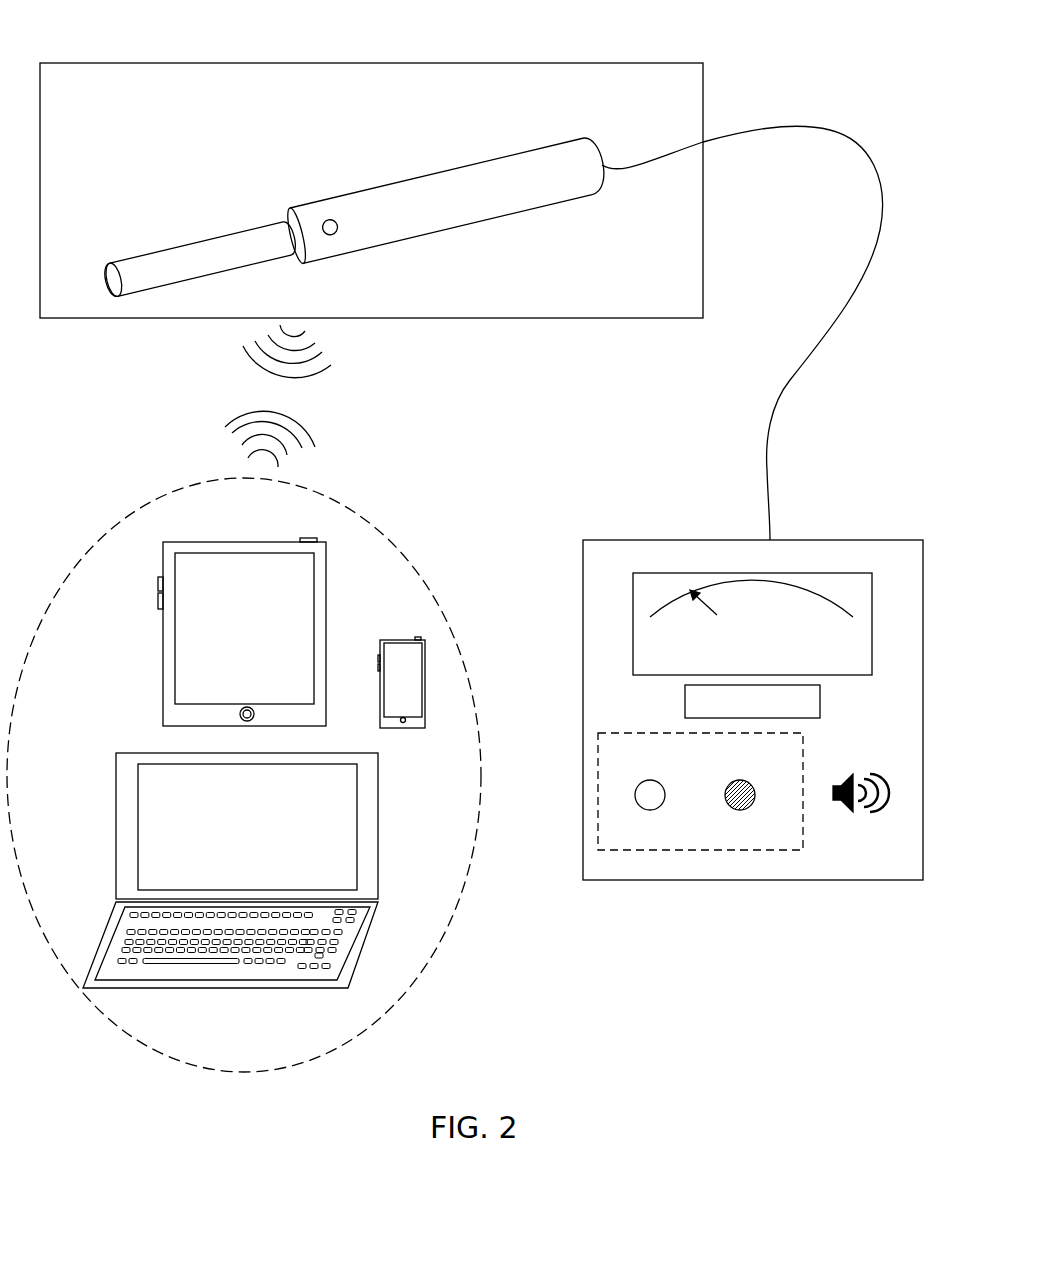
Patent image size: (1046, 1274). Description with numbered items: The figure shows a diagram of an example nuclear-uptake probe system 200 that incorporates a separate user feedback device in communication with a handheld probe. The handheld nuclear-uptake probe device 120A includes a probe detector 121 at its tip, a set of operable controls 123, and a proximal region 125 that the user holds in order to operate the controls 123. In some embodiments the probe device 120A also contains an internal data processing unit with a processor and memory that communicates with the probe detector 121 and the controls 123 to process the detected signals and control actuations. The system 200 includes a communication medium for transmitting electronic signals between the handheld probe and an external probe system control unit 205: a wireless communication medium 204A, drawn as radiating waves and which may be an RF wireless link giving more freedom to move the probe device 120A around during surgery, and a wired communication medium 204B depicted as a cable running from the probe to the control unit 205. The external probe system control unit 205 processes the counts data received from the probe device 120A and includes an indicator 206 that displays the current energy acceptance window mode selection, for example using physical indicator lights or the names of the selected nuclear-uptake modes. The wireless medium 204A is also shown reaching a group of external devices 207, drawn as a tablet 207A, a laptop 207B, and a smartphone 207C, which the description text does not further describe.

The nuclear-uptake probe system 200 is at (803, 82).
The nuclear-uptake probe device 120A is at (495, 63).
The probe detector 121 is at (108, 265).
The set of operable controls 123 is at (331, 235).
The proximal region 125 is at (537, 208).
The wireless communication medium 204A is at (320, 373).
The wired communication medium 204B is at (843, 305).
The external probe system control unit 205 is at (580, 618).
The indicator 206 is at (596, 748).
The external computing devices 207 is at (398, 548).
The tablet computer 207A is at (174, 657).
The laptop computer 207B is at (118, 810).
The smartphone 207C is at (400, 728).